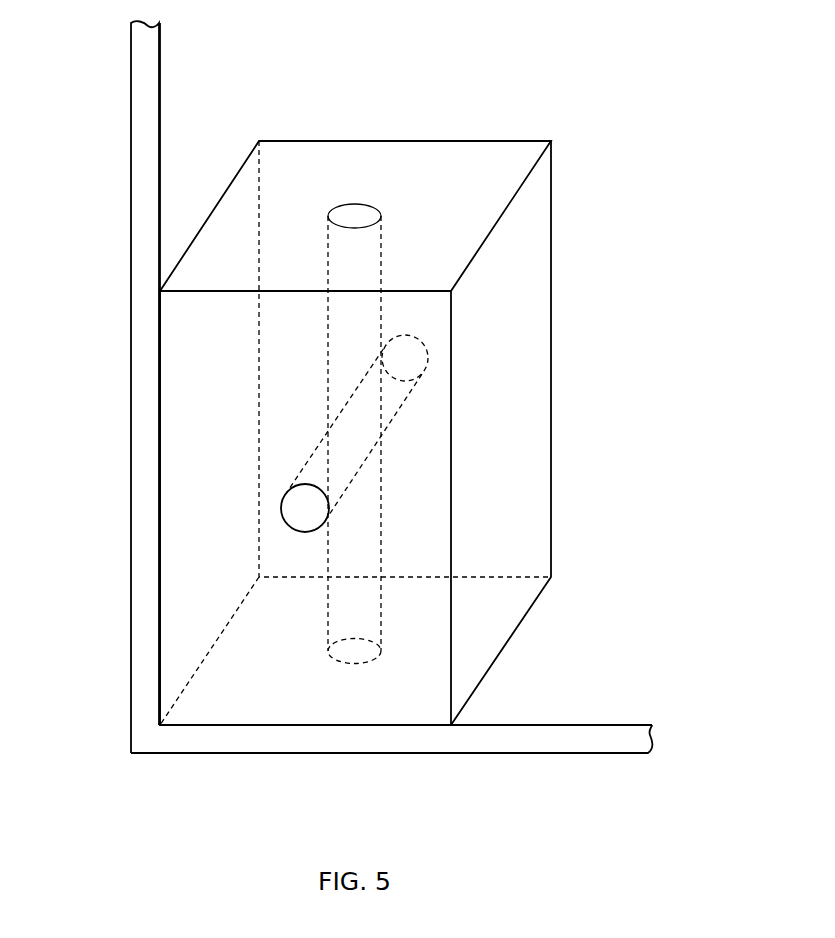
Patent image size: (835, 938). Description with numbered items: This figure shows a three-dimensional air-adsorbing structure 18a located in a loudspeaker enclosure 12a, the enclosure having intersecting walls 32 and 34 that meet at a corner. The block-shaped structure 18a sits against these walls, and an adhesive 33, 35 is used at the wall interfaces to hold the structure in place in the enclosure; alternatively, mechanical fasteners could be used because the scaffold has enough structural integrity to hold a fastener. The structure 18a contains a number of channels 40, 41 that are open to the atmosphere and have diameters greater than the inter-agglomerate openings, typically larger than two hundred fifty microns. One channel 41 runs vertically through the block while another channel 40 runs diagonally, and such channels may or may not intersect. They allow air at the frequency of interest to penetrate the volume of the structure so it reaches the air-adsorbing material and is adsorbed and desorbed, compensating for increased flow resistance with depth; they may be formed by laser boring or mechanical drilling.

The loudspeaker enclosure 12a is at (146, 75).
The 3D air-adsorbing structure 18a is at (460, 141).
The wall 32 is at (143, 345).
The adhesive 33 is at (159, 565).
The wall 34 is at (447, 753).
The adhesive 35 is at (281, 725).
The channel 40 is at (290, 512).
The channel 41 is at (357, 216).